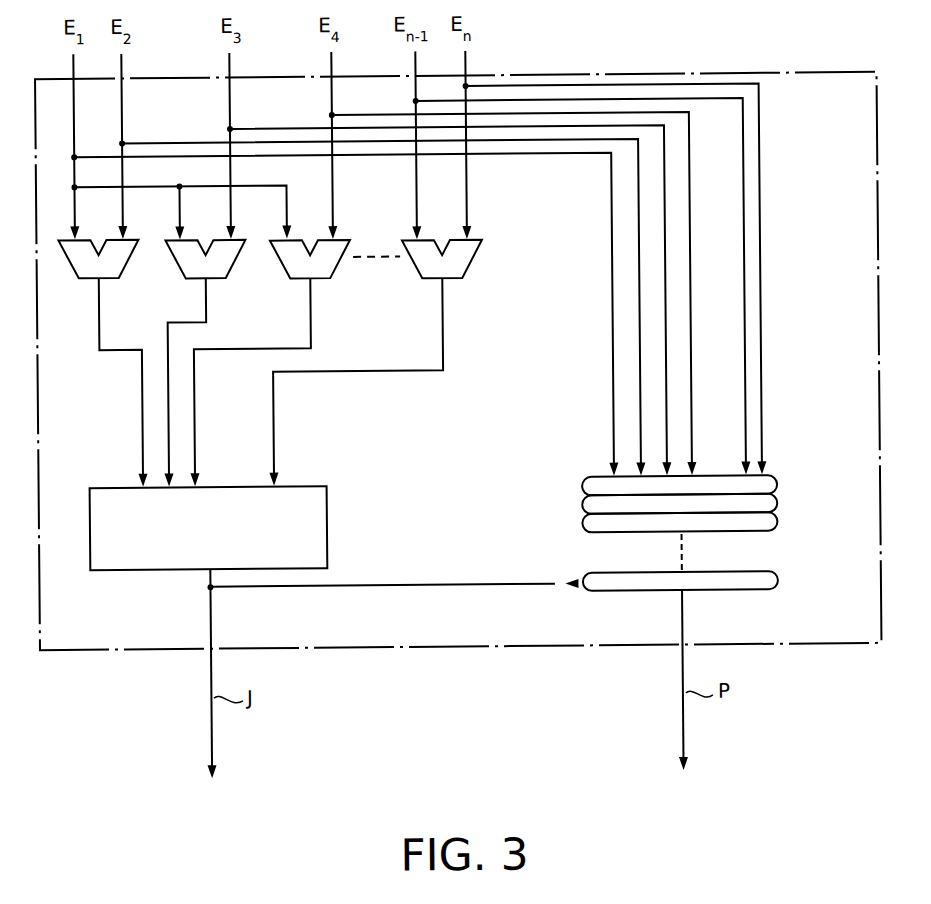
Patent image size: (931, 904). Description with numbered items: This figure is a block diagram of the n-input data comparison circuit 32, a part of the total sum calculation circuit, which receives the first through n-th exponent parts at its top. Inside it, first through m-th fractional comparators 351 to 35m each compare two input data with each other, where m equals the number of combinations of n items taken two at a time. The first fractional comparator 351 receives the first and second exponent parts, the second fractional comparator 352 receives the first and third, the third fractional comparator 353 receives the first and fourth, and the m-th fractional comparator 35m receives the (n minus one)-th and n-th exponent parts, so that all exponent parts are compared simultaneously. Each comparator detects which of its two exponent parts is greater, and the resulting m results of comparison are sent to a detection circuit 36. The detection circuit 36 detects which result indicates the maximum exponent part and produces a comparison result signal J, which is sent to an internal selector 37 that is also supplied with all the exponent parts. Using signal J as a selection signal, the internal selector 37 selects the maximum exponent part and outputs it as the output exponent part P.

The n-input data comparison circuit 32 is at (445, 648).
The first fractional comparator 351 is at (124, 268).
The second fractional comparator 352 is at (231, 269).
The third fractional comparator 353 is at (336, 270).
The m-th fractional comparator 35m is at (467, 271).
The detection circuit 36 is at (297, 485).
The internal selector 37 is at (584, 484).